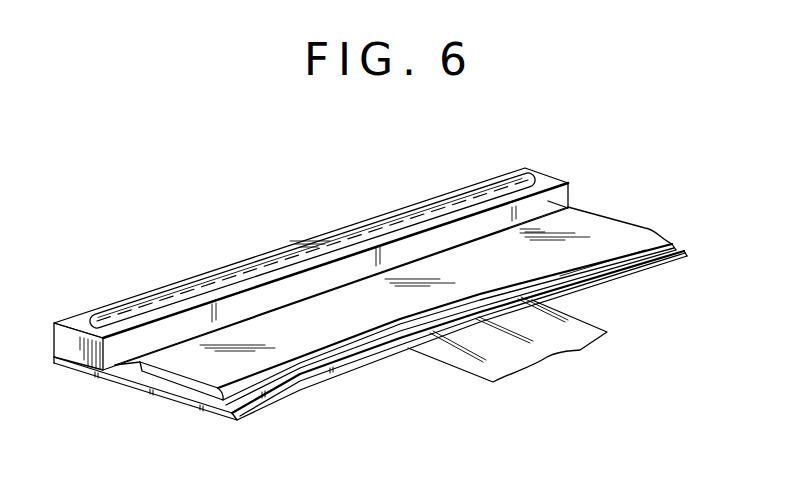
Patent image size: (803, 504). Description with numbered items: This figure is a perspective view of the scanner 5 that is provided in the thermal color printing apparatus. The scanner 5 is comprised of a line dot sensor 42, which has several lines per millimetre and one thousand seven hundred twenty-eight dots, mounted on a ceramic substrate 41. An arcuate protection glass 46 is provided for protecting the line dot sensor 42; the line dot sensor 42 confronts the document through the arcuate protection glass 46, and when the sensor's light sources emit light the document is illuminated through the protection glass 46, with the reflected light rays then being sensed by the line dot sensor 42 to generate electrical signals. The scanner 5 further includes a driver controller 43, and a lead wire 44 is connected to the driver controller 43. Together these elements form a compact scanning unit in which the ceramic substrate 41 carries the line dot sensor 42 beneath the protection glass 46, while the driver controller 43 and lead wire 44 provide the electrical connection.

The scanner 5 is at (598, 212).
The ceramic substrate 41 is at (190, 408).
The line dot sensor 42 is at (362, 240).
The driver controller 43 is at (263, 360).
The lead wire 44 is at (472, 362).
The arcuate protection glass 46 is at (203, 285).